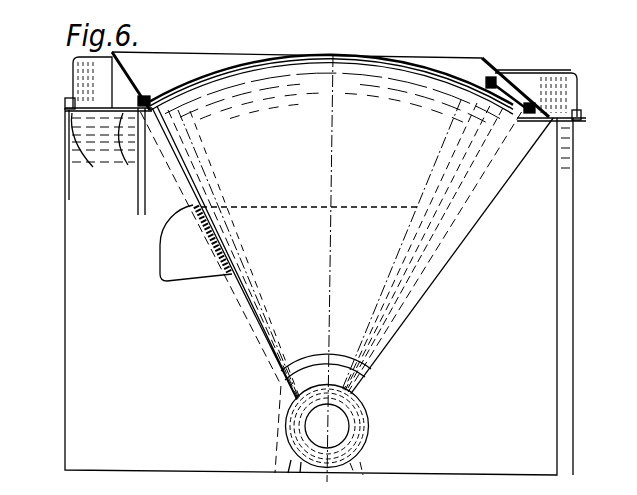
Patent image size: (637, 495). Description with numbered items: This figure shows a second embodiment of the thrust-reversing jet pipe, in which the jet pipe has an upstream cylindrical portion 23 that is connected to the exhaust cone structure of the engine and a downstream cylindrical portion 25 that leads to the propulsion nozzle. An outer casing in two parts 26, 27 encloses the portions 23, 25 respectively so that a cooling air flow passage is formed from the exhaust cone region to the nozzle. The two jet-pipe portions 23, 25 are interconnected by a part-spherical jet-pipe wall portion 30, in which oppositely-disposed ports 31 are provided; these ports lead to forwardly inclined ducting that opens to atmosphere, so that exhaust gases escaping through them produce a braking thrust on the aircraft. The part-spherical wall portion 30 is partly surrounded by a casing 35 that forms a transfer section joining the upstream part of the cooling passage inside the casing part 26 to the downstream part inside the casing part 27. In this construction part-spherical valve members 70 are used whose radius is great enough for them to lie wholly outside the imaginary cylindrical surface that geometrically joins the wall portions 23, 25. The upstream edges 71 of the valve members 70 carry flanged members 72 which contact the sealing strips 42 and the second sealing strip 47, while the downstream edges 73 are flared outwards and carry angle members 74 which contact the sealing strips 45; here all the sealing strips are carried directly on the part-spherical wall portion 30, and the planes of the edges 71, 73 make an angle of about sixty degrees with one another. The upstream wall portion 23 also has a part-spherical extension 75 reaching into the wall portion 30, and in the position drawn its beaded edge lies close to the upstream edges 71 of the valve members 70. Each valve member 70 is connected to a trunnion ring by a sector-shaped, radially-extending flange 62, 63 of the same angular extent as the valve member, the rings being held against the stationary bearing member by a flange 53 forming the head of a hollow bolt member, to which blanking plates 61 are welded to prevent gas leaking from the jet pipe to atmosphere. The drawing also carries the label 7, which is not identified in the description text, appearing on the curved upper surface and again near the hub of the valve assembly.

The housing 7 is at (347, 58).
The upstream cylindrical portion 23 is at (84, 151).
The downstream cylindrical portion 25 is at (560, 128).
The outer casing part 26 is at (68, 98).
The outer casing part 27 is at (577, 112).
The part-spherical jet-pipe wall portion 30 is at (530, 69).
The ports 31 is at (345, 210).
The casing 35 is at (103, 60).
The sealing strips 42 is at (141, 97).
The sealing strips 45 is at (523, 106).
The second sealing strip 47 is at (489, 79).
The flange 53 is at (363, 410).
The blanking plates 61 is at (343, 420).
The sector shaped radially-extending flange 62 is at (313, 364).
The sector shaped radially-extending flange 63 is at (362, 466).
The part-spherical valve members 70 is at (160, 101).
The upstream edges 71 is at (263, 293).
The flanged members 72 is at (152, 108).
The downstream edges 73 is at (522, 118).
The angle members 74 is at (545, 126).
The part-spherical extension 75 is at (178, 288).